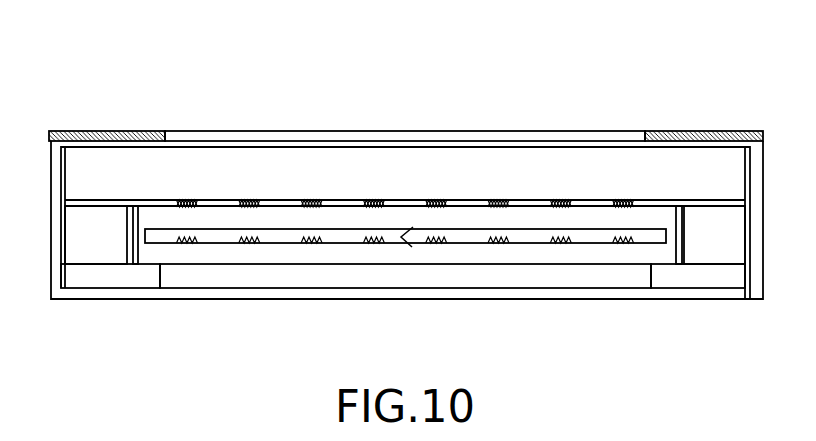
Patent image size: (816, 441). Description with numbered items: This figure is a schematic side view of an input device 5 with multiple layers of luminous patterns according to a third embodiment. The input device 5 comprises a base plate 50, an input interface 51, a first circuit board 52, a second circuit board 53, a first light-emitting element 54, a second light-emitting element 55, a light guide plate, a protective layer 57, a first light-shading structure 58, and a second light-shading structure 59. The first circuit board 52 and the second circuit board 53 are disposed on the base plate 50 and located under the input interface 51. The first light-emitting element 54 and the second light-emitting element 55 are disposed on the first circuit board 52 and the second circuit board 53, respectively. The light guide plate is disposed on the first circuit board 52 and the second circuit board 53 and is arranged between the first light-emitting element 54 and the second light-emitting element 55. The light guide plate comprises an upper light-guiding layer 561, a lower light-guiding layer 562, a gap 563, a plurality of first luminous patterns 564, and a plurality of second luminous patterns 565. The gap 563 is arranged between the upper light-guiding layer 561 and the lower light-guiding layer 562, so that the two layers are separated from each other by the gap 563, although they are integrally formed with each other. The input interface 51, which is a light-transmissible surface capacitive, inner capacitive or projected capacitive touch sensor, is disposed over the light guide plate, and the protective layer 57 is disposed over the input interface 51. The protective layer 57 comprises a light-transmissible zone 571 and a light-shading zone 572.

The input device 5 is at (598, 32).
The base plate 50 is at (641, 295).
The input interface 51 is at (723, 167).
The first circuit board 52 is at (679, 277).
The second circuit board 53 is at (131, 277).
The first light-emitting element 54 is at (722, 225).
The second light-emitting element 55 is at (88, 225).
The protective layer 57 is at (752, 83).
The light-transmissible zone 571 is at (594, 131).
The light-shading zone 572 is at (674, 131).
The first light-shading structure 58 is at (679, 247).
The second light-shading structure 59 is at (132, 225).
The upper light-guiding layer 561 is at (349, 220).
The lower light-guiding layer 562 is at (280, 249).
The gap 563 is at (403, 237).
The first luminous patterns 564 is at (185, 198).
The second luminous patterns 565 is at (508, 243).